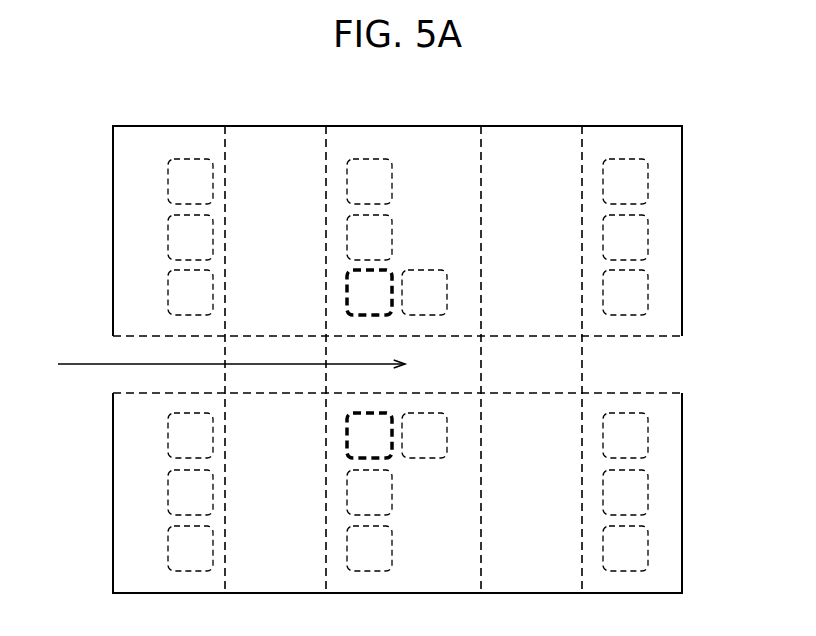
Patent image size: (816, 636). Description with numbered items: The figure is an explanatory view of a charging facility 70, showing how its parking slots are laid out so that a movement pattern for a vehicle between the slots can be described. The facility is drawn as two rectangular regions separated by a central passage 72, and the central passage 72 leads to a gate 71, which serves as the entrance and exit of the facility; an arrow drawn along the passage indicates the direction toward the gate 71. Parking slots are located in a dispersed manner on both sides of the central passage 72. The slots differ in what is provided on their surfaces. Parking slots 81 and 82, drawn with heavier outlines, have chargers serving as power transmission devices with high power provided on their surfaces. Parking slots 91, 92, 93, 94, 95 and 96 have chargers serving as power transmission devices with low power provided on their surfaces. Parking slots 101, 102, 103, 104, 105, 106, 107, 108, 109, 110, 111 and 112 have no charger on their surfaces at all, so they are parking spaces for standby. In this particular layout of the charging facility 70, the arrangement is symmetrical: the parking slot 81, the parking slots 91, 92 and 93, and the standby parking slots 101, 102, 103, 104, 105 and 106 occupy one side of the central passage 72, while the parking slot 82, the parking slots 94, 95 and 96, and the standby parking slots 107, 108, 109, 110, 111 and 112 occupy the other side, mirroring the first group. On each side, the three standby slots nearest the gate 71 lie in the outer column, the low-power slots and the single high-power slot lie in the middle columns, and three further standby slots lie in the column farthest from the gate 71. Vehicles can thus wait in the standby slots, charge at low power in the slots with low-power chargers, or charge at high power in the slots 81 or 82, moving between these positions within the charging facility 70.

The charging facility 70 is at (634, 126).
The gate 71 is at (105, 382).
The central passage 72 is at (648, 393).
The parking slot 81 is at (347, 292).
The parking slot 82 is at (347, 437).
The parking slot 91 is at (347, 180).
The parking slot 92 is at (347, 235).
The parking slot 93 is at (448, 291).
The parking slot 94 is at (347, 492).
The parking slot 95 is at (347, 547).
The parking slot 96 is at (448, 436).
The parking slot 101 is at (168, 184).
The parking slot 102 is at (168, 244).
The parking slot 103 is at (168, 299).
The parking slot 104 is at (648, 183).
The parking slot 105 is at (648, 238).
The parking slot 106 is at (648, 295).
The parking slot 107 is at (168, 441).
The parking slot 108 is at (168, 497).
The parking slot 109 is at (168, 554).
The parking slot 110 is at (648, 438).
The parking slot 111 is at (648, 495).
The parking slot 112 is at (648, 550).